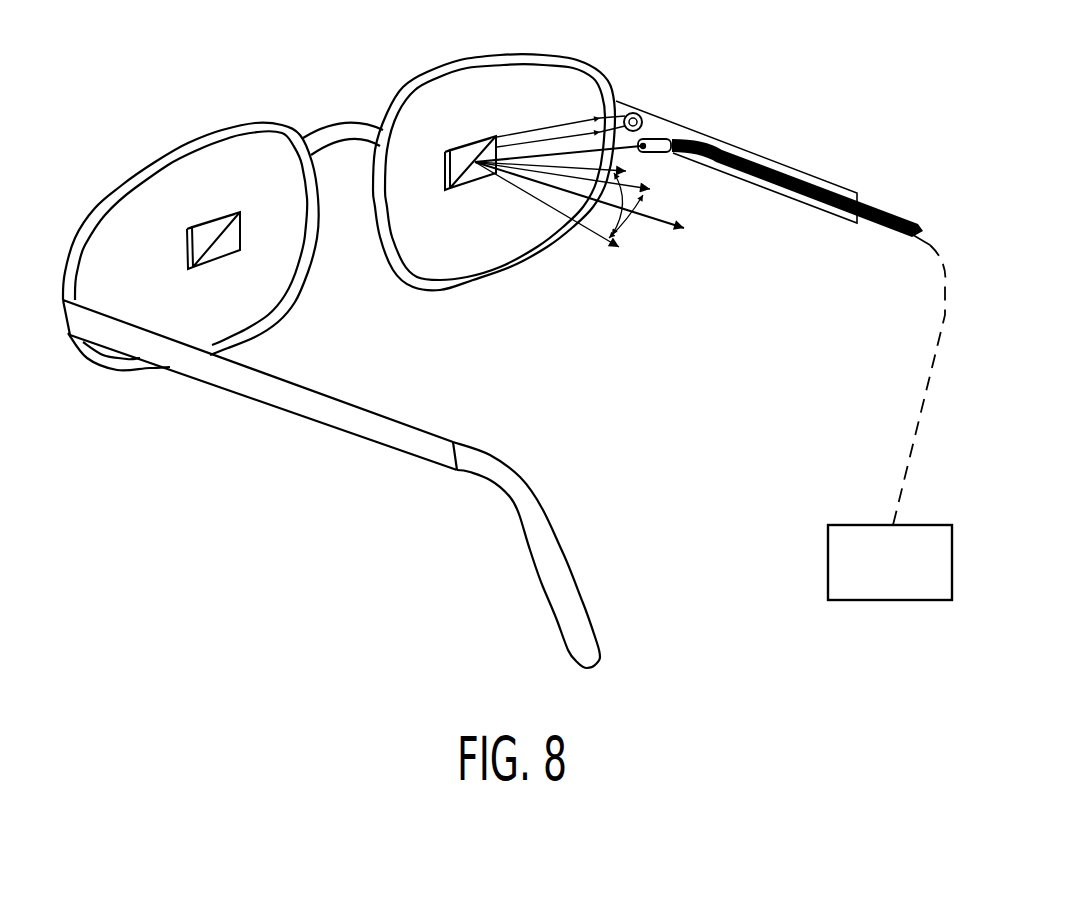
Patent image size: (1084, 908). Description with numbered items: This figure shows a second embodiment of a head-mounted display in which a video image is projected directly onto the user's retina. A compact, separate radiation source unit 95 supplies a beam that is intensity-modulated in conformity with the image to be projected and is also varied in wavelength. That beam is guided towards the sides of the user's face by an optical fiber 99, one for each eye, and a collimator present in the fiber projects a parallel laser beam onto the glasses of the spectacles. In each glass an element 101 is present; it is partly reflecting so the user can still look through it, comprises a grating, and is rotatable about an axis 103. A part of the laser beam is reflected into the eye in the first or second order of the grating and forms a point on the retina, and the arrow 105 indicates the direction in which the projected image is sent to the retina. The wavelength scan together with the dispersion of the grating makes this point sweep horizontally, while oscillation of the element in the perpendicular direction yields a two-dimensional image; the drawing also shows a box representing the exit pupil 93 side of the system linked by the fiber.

The exit pupil 93 is at (884, 585).
The radiation source unit 95 is at (341, 66).
The optical fiber 99 is at (752, 157).
The element 101 is at (197, 242).
The axis 103 is at (637, 112).
The arrow 105 is at (679, 233).